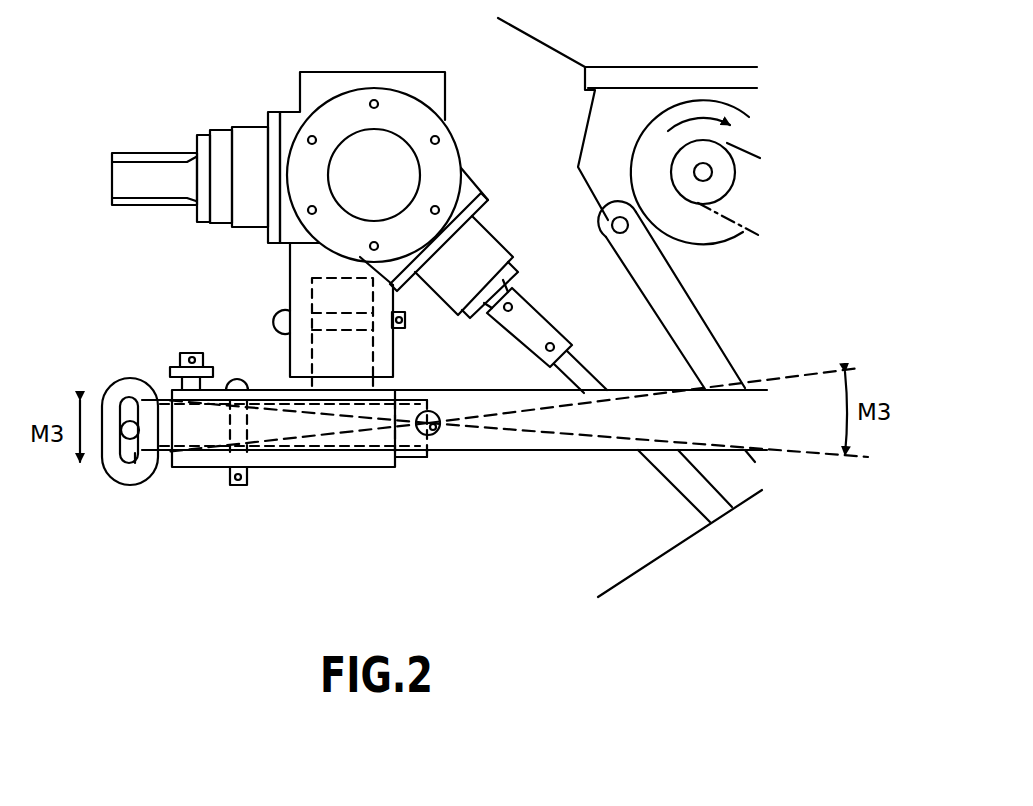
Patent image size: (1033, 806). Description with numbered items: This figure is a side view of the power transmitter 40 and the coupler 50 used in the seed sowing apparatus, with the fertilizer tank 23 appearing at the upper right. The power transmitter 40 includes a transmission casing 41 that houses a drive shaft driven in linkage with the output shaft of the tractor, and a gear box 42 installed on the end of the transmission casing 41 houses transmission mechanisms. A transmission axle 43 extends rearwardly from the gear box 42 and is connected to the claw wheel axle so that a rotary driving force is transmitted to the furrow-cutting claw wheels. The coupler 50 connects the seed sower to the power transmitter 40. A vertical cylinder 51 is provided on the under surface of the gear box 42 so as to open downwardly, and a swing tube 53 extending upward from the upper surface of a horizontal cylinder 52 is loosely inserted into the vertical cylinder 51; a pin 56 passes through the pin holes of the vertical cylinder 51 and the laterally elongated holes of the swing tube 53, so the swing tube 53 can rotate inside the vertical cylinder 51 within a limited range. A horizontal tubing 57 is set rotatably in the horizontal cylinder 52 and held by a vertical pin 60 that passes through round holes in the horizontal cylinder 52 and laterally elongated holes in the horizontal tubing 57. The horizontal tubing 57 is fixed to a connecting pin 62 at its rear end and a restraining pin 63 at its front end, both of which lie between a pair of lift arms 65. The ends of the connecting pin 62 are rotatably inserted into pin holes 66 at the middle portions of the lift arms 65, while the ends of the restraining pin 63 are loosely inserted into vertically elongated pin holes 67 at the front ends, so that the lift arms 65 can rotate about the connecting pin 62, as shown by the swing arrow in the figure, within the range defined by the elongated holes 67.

The fertilizer tank 23 is at (553, 38).
The power transmitter 40 is at (243, 72).
The transmission casing 41 is at (323, 80).
The gear box 42 is at (308, 152).
The transmission axle 43 is at (583, 370).
The coupler 50 is at (473, 473).
The vertical cylinder 51 is at (300, 257).
The horizontal cylinder 52 is at (337, 467).
The swing tube 53 is at (375, 347).
The pin 56 is at (278, 317).
The horizontal tubing 57 is at (410, 463).
The vertical pin 60 is at (232, 453).
The connecting pin 62 is at (432, 434).
The restraining pin 63 is at (128, 420).
The lift arm 65 is at (550, 433).
The pin hole 66 is at (437, 429).
The vertically elongated pin hole 67 is at (133, 460).